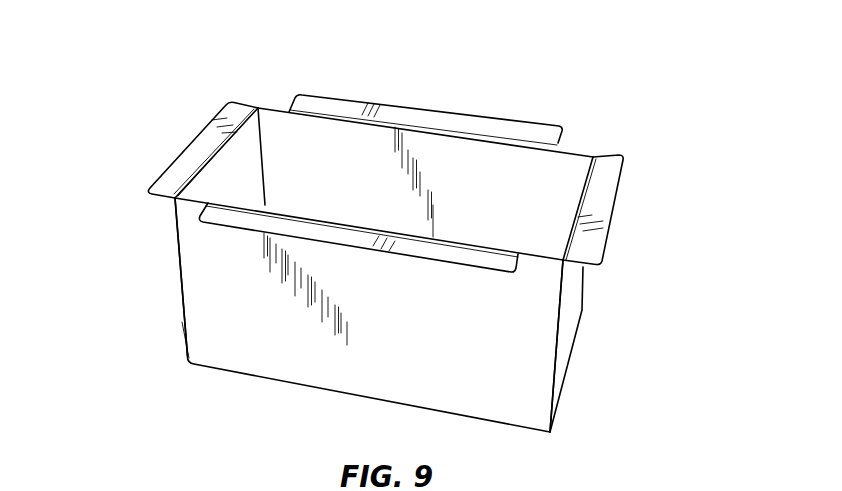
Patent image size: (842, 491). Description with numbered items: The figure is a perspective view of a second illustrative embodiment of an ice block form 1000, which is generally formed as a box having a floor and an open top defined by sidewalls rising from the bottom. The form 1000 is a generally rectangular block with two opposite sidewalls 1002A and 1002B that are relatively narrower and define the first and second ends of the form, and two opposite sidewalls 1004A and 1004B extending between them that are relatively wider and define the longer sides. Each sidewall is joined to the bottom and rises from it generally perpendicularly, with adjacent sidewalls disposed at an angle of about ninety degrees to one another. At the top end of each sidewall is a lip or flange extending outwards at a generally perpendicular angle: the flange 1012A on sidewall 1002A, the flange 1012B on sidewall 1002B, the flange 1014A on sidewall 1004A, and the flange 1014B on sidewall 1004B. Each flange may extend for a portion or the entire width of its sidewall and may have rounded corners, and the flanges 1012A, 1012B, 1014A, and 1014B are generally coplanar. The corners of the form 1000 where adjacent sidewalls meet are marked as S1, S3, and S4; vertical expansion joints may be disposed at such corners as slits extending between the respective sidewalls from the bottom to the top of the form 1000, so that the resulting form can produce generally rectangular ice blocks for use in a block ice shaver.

The ice block form 1000 is at (622, 92).
The sidewall 1002A is at (570, 320).
The sidewall 1002B is at (230, 172).
The sidewall 1004A is at (248, 345).
The sidewall 1004B is at (497, 167).
The flange 1012A is at (603, 210).
The flange 1012B is at (187, 160).
The flange 1014A is at (353, 238).
The flange 1014B is at (422, 118).
The first seam S1 is at (558, 437).
The third seam S3 is at (178, 345).
The fourth seam S4 is at (266, 143).